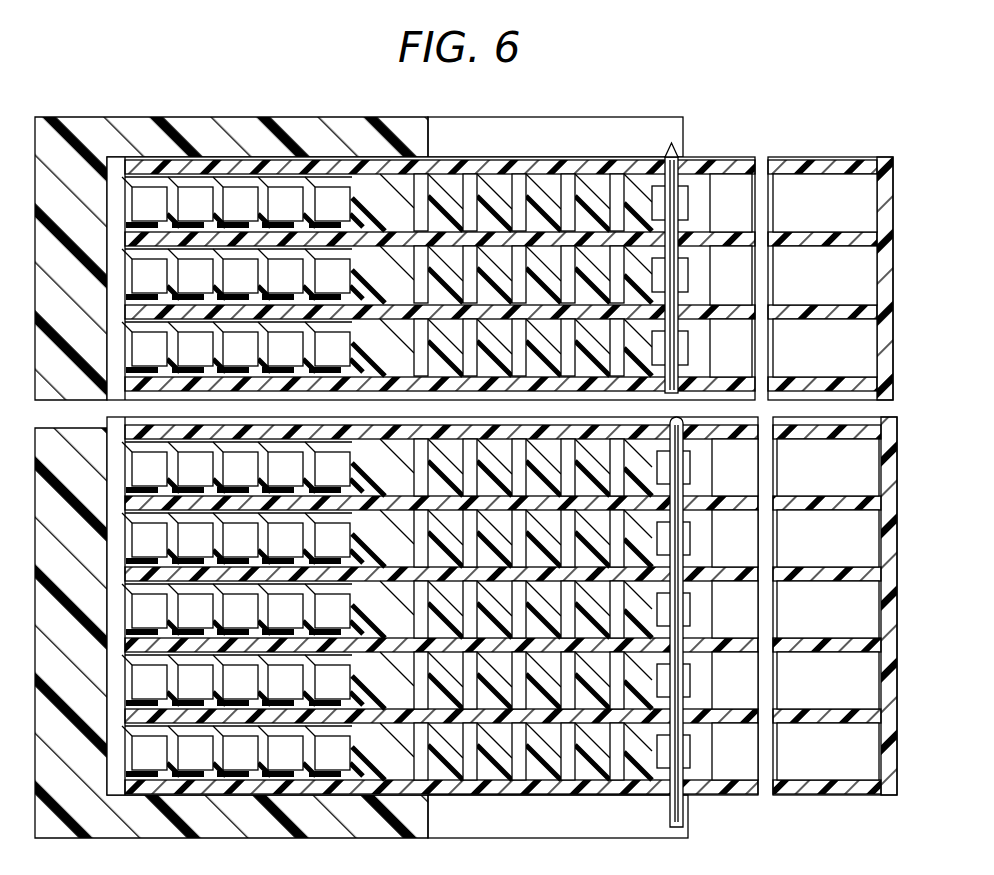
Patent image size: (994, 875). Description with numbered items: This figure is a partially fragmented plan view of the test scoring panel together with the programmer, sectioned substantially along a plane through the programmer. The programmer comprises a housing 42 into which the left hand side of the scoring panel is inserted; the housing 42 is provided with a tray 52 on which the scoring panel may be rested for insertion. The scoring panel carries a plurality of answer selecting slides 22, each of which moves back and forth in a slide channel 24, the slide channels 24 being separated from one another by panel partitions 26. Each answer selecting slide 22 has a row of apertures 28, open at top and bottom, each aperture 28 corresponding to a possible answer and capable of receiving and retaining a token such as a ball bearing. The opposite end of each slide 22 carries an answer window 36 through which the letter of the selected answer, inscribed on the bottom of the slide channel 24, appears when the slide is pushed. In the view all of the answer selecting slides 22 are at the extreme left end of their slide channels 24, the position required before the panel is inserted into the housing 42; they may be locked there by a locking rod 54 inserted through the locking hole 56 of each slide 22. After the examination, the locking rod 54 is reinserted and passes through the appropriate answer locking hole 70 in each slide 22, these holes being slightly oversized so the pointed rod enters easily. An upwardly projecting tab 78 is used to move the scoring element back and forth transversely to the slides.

The answer selecting slide 22 is at (685, 466).
The slide channel 24 is at (827, 700).
The panel partition 26 is at (835, 492).
The aperture 28 is at (333, 157).
The answer window 36 is at (685, 269).
The housing 42 is at (88, 330).
The tray 52 is at (626, 122).
The locking rod 54 is at (677, 812).
The locking hole 56 is at (683, 766).
The answer locking hole 70 is at (632, 798).
The upwardly projecting tab 78 is at (340, 790).